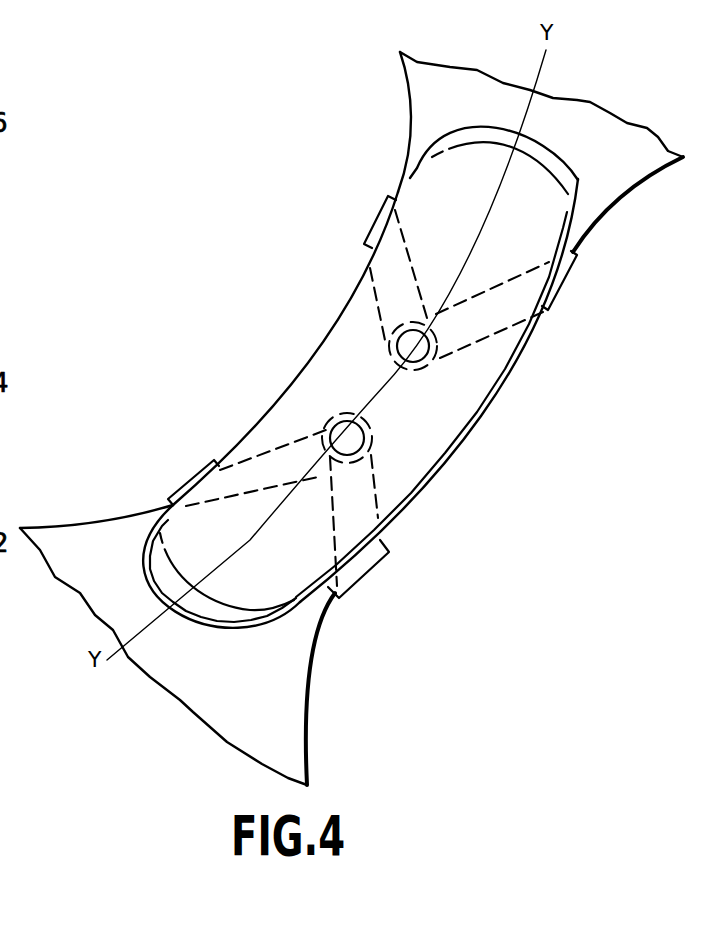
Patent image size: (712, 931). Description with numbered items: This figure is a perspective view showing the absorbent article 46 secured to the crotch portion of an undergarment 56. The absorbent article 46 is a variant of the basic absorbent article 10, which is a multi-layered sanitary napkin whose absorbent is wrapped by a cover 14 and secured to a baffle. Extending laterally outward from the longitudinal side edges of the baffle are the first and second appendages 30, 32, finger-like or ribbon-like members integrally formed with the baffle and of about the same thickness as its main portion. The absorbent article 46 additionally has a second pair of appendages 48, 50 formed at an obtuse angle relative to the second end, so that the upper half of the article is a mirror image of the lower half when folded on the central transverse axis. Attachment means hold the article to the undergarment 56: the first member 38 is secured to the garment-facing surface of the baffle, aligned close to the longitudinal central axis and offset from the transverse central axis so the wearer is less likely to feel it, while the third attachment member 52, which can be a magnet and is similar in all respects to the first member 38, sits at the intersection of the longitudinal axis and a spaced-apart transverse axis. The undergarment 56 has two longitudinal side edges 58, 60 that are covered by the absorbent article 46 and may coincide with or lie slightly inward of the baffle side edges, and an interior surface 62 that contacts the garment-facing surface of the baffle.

The absorbent article 10 is at (478, 393).
The cover 14 is at (297, 392).
The first appendage 30 is at (559, 277).
The second appendage 32 is at (370, 233).
The first member 38 is at (428, 371).
The absorbent article 46 is at (341, 155).
The appendage 48 is at (365, 568).
The appendage 50 is at (191, 483).
The third attachment member 52 is at (336, 416).
The undergarment 56 is at (620, 172).
The longitudinal side edge 58 is at (331, 618).
The longitudinal side edge 60 is at (127, 518).
The interior surface 62 is at (283, 726).